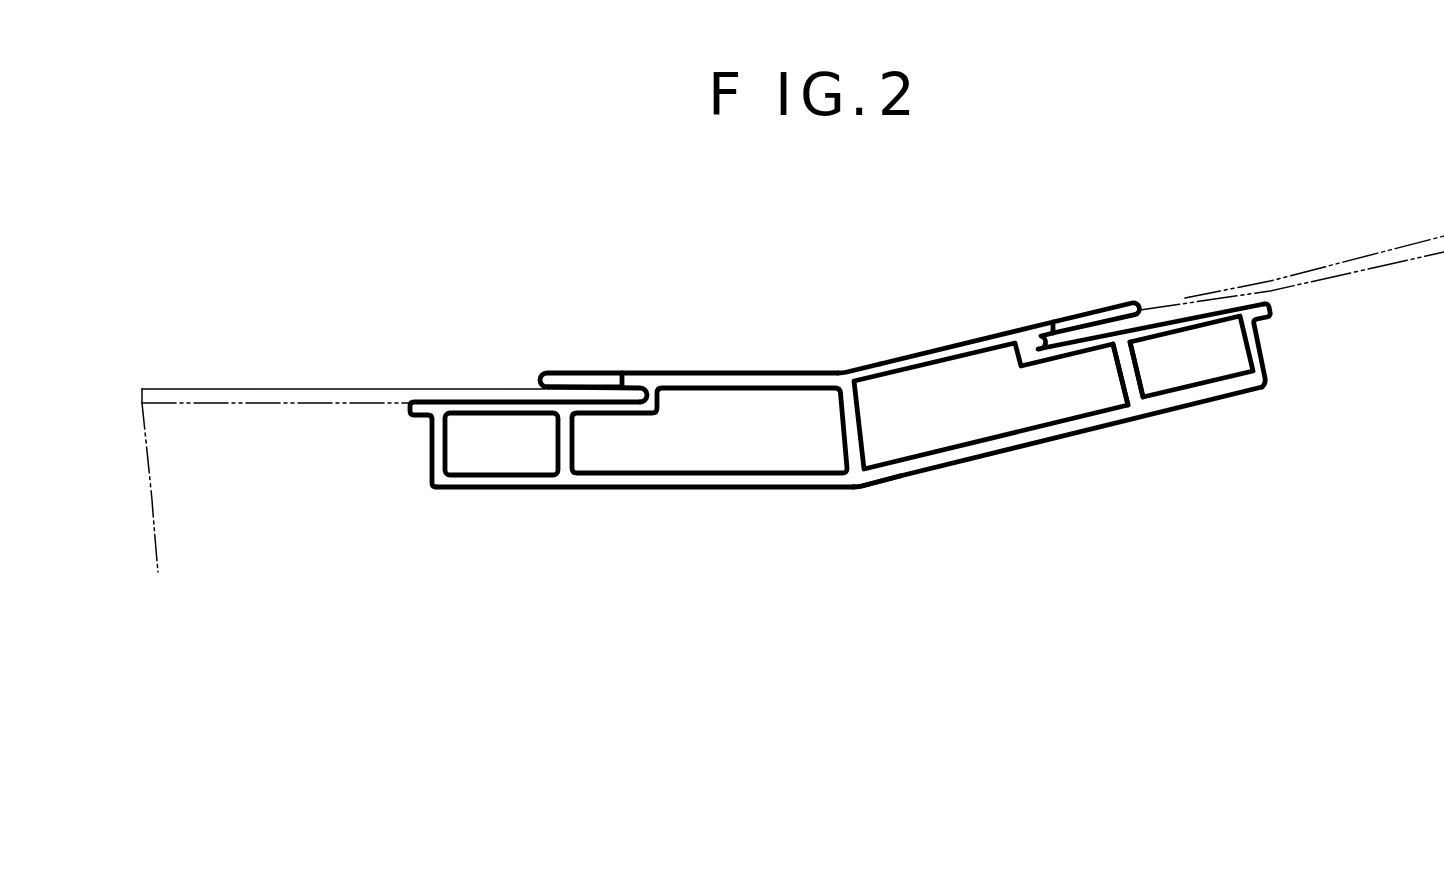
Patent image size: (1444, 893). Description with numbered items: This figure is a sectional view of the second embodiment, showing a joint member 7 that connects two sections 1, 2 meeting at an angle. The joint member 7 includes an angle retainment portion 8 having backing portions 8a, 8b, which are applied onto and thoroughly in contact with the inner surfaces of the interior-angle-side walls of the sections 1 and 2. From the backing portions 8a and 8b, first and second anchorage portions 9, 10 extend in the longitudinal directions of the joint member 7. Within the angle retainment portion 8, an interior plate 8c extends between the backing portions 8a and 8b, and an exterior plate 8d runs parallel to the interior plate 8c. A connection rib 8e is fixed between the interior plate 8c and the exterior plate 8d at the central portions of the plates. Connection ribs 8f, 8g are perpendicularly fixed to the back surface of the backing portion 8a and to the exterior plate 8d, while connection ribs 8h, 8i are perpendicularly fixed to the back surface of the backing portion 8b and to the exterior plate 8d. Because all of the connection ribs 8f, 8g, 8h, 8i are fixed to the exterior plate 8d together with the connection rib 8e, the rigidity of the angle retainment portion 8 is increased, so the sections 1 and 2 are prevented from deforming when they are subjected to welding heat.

The section 1 is at (303, 391).
The section 2 is at (1337, 263).
The joint member 7 is at (912, 493).
The angle retainment portion 8 is at (678, 482).
The backing portion 8a is at (488, 400).
The backing portion 8b is at (1188, 320).
The interior plate 8c is at (763, 380).
The exterior plate 8d is at (1048, 437).
The connection rib 8e is at (846, 428).
The connection rib 8f is at (438, 454).
The connection rib 8g is at (561, 448).
The connection rib 8h is at (1136, 380).
The connection rib 8i is at (1264, 347).
The first anchorage portion 9 is at (587, 380).
The second anchorage portion 10 is at (1102, 310).